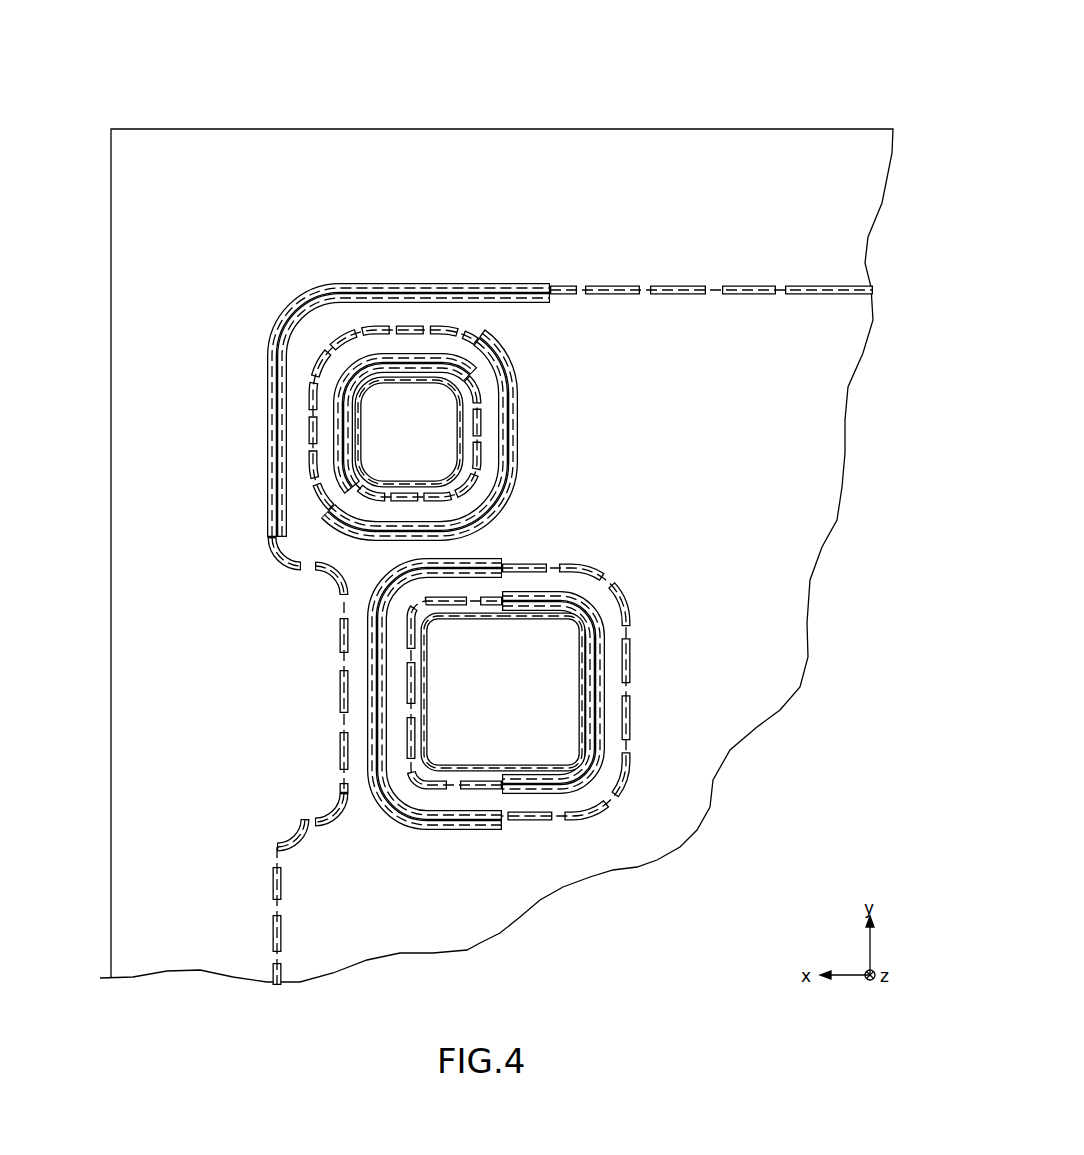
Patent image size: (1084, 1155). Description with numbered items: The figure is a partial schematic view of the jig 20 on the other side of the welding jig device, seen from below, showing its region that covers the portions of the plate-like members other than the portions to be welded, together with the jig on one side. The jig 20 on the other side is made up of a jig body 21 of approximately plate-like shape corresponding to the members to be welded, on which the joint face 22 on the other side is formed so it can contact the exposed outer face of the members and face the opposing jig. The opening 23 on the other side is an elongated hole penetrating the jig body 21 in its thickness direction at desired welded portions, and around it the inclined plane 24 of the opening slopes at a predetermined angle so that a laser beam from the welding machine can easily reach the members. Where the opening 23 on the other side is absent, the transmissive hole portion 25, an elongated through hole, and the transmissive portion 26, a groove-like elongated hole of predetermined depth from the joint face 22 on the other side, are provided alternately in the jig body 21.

The jig on the other side 20 is at (247, 99).
The jig body 21 is at (172, 173).
The joint face on the other side 22 is at (365, 840).
The opening on the other side 23 is at (375, 687).
The inclined plane of the opening 24 is at (370, 712).
The transmissive hole portion 25 is at (406, 702).
The transmissive portion 26 is at (624, 698).